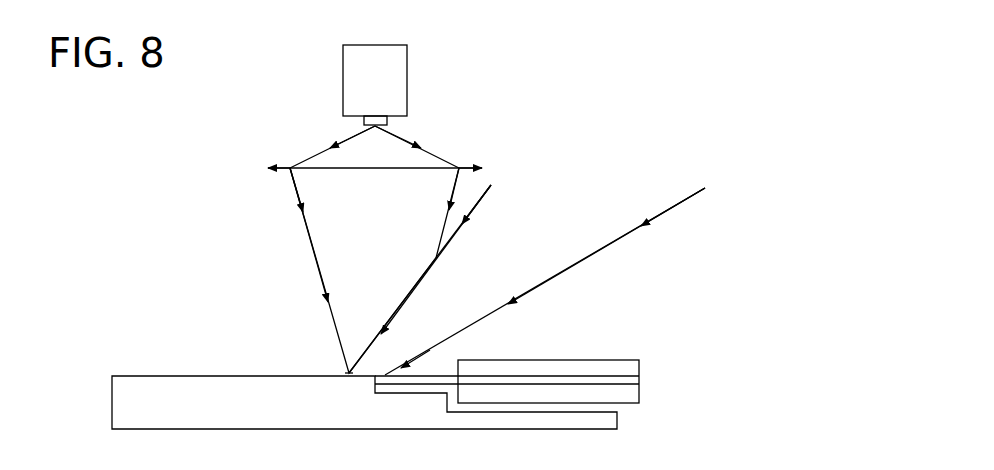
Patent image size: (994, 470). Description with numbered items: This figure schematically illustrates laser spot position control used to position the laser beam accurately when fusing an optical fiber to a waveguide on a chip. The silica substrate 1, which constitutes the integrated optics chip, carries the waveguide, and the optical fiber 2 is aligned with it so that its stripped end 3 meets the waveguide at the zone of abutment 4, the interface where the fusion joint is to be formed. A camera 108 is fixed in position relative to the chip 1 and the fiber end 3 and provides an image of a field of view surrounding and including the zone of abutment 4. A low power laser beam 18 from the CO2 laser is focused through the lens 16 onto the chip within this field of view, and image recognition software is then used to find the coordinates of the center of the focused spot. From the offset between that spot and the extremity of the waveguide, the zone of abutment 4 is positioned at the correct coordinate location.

The camera 108 is at (336, 79).
The lens 16 is at (272, 165).
The low power laser beam 18 is at (584, 182).
The silica substrate 1 is at (188, 373).
The optical fiber 2 is at (598, 352).
The end of the optical fiber 3 is at (427, 382).
The zone of abutment 4 is at (370, 387).